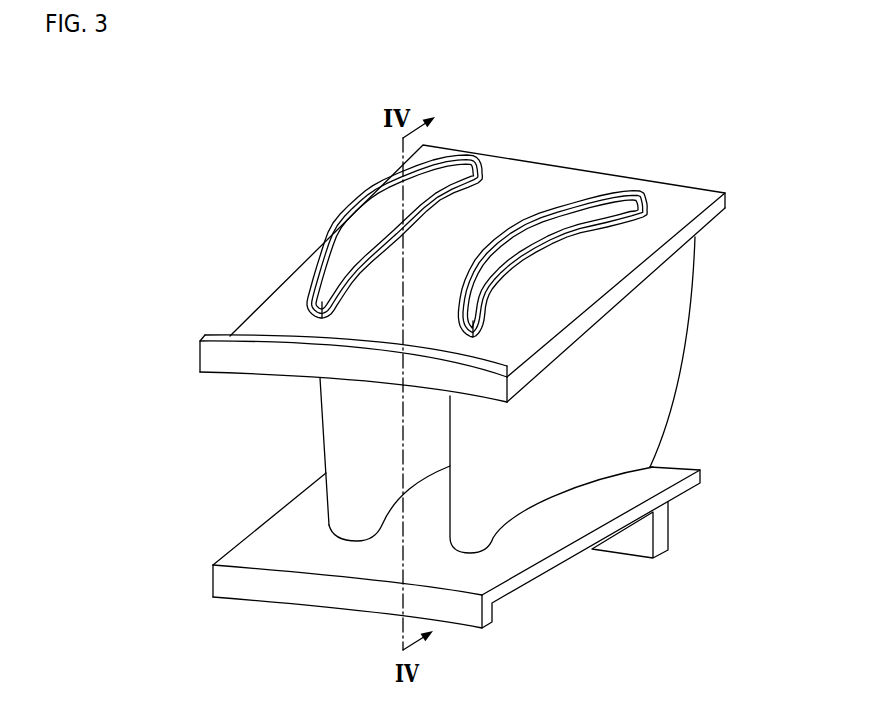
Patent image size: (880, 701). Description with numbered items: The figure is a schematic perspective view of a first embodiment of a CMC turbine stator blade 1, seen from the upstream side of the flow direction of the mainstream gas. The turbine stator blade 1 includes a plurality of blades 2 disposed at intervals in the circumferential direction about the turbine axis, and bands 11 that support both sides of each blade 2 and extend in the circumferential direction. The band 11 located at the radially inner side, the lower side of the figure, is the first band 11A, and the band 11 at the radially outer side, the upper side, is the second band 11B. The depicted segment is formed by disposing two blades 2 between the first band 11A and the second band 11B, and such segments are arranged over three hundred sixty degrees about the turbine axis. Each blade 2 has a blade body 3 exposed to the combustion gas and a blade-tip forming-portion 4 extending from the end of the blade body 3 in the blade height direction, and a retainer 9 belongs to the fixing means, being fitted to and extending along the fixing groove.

The turbine stator blade 1 is at (243, 156).
The blade 2 is at (322, 423).
The blade body 3 is at (337, 458).
The blade-tip forming-portion 4 is at (318, 276).
The retainer 9 is at (340, 302).
The band 11 is at (438, 386).
The first band 11A is at (272, 558).
The second band 11B is at (267, 330).